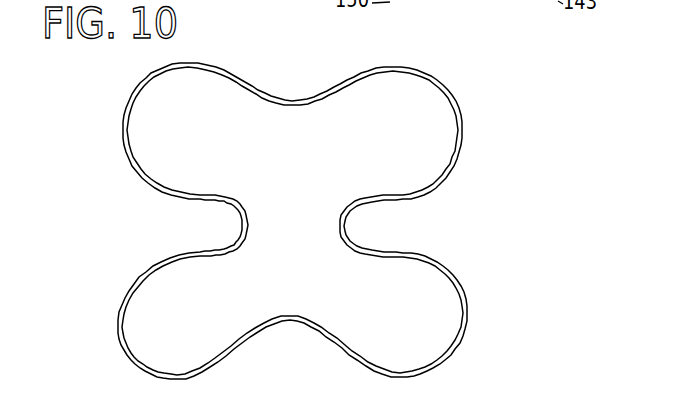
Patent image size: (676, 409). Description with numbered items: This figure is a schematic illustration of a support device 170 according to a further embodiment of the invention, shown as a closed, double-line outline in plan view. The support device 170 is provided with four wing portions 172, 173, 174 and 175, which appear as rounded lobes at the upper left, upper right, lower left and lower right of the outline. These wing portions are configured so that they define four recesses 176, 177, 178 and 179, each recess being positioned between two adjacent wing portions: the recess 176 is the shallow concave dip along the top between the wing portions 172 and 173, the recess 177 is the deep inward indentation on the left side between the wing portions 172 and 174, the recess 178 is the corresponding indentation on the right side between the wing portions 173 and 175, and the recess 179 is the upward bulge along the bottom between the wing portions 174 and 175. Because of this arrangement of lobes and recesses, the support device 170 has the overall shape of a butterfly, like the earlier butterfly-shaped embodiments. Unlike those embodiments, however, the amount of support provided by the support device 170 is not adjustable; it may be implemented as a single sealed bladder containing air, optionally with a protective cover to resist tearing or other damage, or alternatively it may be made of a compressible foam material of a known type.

The support device 170 is at (518, 101).
The wing portion 172 is at (161, 96).
The wing portion 173 is at (413, 85).
The wing portion 174 is at (147, 352).
The wing portion 175 is at (411, 357).
The recess 176 is at (291, 86).
The recess 177 is at (208, 227).
The recess 178 is at (359, 222).
The recess 179 is at (304, 350).